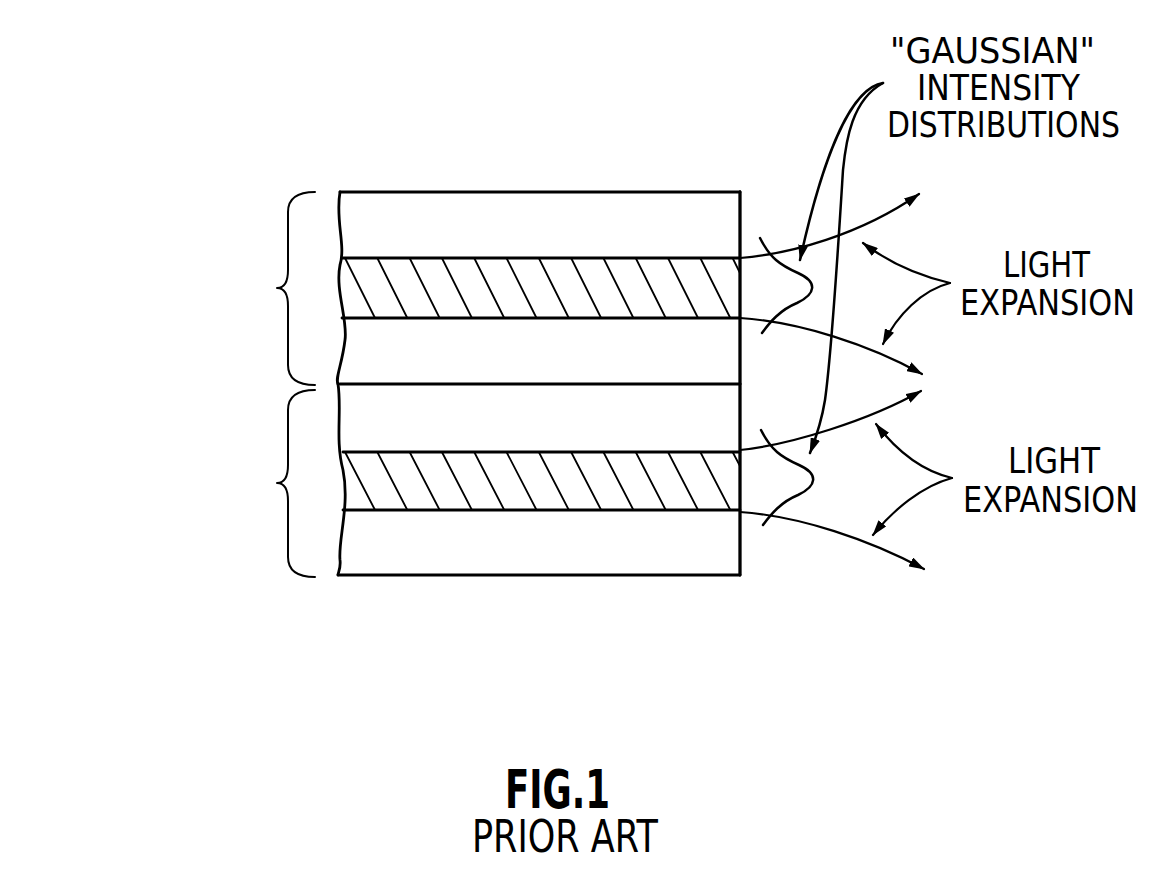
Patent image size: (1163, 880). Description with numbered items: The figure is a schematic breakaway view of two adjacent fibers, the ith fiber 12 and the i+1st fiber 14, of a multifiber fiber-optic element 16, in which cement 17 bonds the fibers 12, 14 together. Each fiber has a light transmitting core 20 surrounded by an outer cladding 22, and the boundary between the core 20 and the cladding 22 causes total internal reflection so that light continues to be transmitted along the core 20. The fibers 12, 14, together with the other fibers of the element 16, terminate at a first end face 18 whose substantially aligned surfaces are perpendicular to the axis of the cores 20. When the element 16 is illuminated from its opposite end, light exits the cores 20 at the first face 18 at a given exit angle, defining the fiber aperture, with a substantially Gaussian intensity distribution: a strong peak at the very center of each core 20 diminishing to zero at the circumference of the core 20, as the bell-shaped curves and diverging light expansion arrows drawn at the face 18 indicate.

The ith fiber 12 is at (416, 480).
The i+1st fiber 14 is at (398, 288).
The multifiber fiber-optic element 16 is at (590, 578).
The cement 17 is at (560, 387).
The first end face 18 is at (743, 545).
The light transmitting core 20 is at (660, 487).
The outer cladding 22 is at (437, 546).